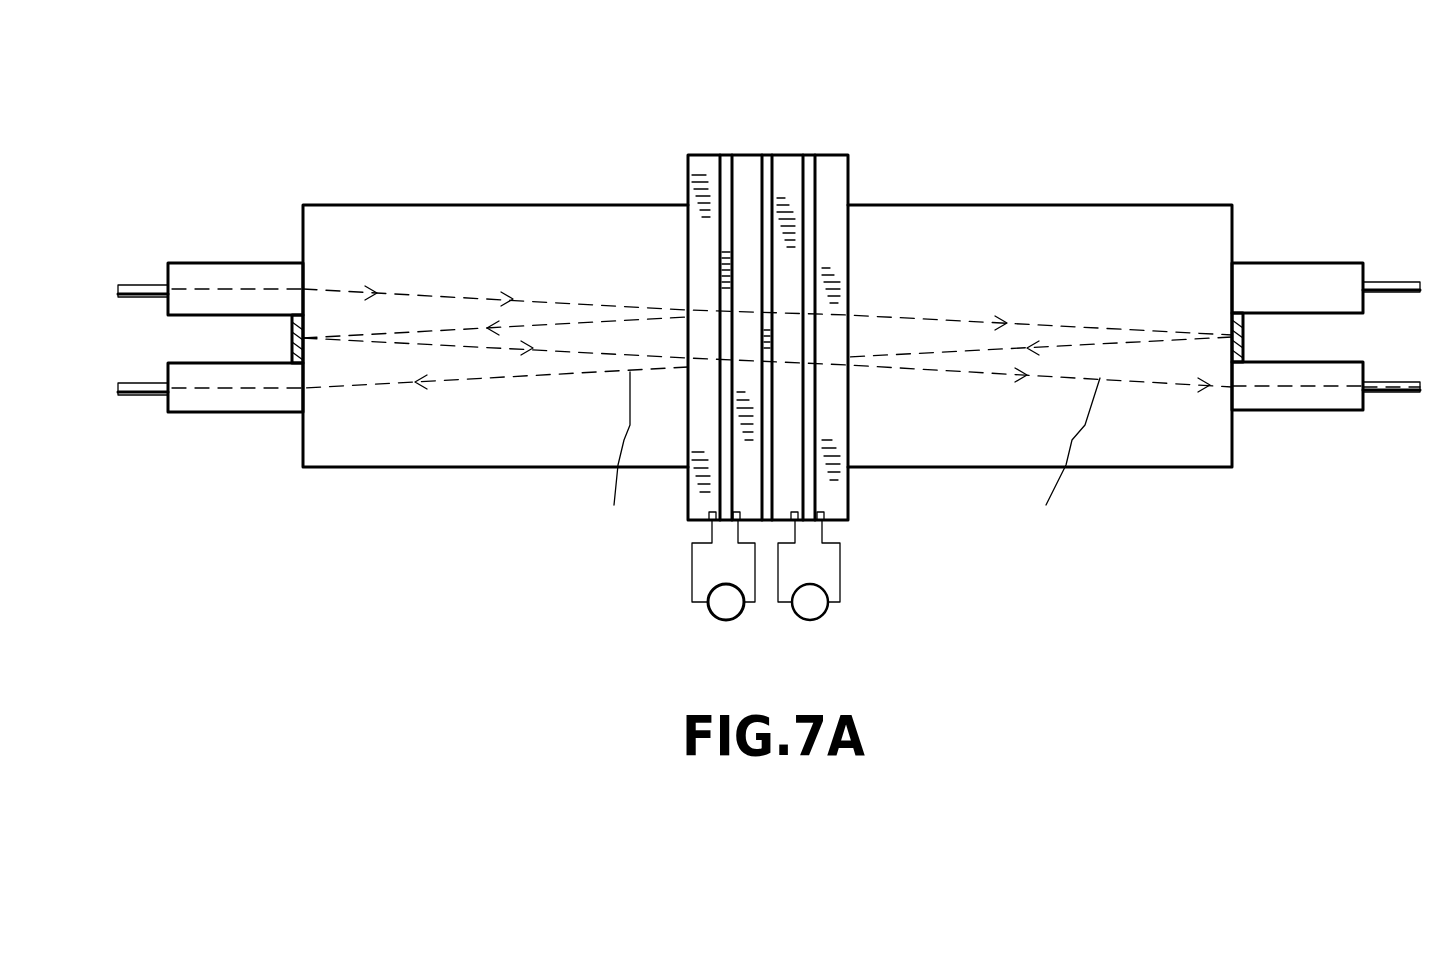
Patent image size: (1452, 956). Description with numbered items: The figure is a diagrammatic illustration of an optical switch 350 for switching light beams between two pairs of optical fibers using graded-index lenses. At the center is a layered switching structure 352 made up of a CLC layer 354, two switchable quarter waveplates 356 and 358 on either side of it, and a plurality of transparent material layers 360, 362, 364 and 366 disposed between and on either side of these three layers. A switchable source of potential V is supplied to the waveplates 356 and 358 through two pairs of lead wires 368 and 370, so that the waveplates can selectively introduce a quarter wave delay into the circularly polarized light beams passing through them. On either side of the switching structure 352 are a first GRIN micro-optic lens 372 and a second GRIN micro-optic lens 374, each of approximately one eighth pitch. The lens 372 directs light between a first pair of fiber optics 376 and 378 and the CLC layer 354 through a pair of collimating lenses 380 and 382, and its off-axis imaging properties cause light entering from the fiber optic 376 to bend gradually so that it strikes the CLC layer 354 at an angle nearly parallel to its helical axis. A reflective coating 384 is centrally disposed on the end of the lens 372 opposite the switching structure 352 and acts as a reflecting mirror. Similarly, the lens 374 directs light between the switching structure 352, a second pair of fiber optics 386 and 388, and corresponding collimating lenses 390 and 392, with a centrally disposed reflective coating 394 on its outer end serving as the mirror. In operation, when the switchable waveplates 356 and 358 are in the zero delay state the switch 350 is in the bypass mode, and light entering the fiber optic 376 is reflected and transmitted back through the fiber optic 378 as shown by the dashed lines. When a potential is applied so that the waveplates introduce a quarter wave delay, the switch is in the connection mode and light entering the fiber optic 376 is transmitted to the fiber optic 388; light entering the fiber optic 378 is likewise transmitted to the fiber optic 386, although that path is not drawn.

The optical switch 350 is at (761, 328).
The layered switching structure 352 is at (776, 274).
The CLC layer 354 is at (770, 158).
The switchable quarter waveplate 356 is at (725, 158).
The switchable quarter waveplate 358 is at (810, 160).
The transparent material layer 360 is at (697, 158).
The transparent material layer 362 is at (748, 158).
The transparent material layer 364 is at (787, 158).
The transparent material layer 366 is at (875, 309).
The pair of lead wires 368 is at (678, 588).
The pair of lead wires 370 is at (860, 590).
The first GRIN micro-optic lens 372 is at (495, 305).
The second GRIN micro-optic lens 374 is at (1040, 304).
The fiber optic 376 is at (136, 264).
The fiber optic 378 is at (135, 437).
The collimating lens 380 is at (235, 262).
The collimating lens 382 is at (235, 427).
The reflective coating 384 is at (251, 339).
The fiber optic 386 is at (1390, 251).
The fiber optic 388 is at (1390, 427).
The collimating lens 390 is at (1297, 253).
The collimating lens 392 is at (1297, 423).
The reflective coating 394 is at (1281, 337).